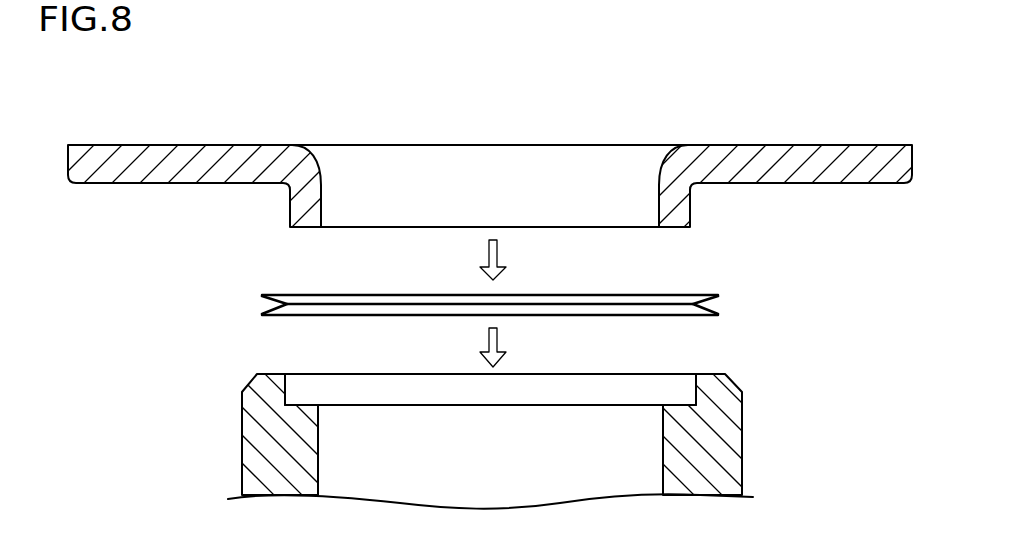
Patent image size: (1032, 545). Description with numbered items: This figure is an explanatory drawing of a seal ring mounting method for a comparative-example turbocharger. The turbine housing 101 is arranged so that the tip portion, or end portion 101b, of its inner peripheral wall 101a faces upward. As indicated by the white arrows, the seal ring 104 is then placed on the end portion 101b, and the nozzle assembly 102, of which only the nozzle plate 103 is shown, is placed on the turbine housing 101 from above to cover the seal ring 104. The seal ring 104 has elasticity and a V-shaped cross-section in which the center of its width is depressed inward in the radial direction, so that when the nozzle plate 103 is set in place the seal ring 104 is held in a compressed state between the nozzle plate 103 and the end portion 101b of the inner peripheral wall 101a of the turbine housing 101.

The turbine housing 101 is at (229, 487).
The inner peripheral wall 101a is at (241, 445).
The end portion of inner peripheral wall 101b is at (262, 392).
The nozzle assembly 102 is at (223, 112).
The nozzle plate 103 is at (277, 167).
The seal ring 104 is at (312, 294).